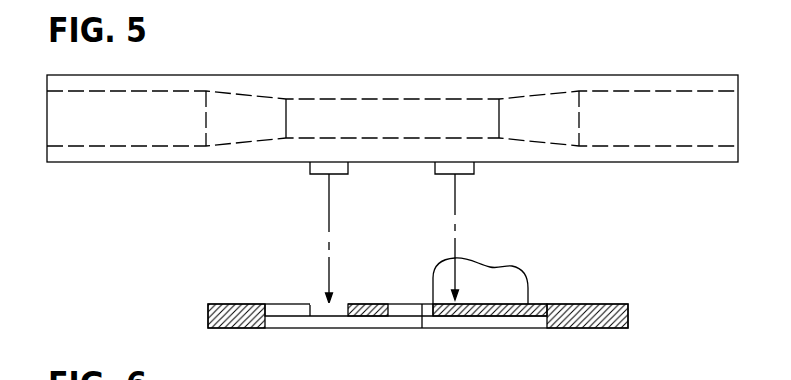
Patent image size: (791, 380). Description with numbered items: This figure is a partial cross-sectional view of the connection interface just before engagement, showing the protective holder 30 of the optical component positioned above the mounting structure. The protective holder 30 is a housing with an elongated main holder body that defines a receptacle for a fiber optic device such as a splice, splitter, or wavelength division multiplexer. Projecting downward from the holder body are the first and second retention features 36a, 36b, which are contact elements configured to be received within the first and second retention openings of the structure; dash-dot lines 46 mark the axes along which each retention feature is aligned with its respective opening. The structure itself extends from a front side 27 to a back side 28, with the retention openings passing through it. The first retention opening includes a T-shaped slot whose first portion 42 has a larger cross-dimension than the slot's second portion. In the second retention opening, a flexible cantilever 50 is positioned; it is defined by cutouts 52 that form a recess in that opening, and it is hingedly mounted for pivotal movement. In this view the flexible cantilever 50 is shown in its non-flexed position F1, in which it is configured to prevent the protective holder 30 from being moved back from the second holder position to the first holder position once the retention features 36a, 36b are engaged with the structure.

The protective holder 30 is at (648, 73).
The first retention feature 36a is at (310, 174).
The second retention feature 36b is at (474, 174).
The centerline of tab 46 is at (328, 263).
The non-flexed position F1 is at (546, 258).
The front side 27 is at (430, 320).
The back side 28 is at (597, 302).
The first portion of the T-shaped slot 42 is at (317, 315).
The flexible cantilever 50 is at (473, 317).
The cutouts 52 is at (512, 323).